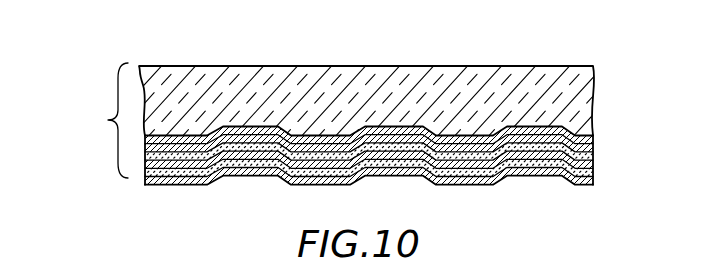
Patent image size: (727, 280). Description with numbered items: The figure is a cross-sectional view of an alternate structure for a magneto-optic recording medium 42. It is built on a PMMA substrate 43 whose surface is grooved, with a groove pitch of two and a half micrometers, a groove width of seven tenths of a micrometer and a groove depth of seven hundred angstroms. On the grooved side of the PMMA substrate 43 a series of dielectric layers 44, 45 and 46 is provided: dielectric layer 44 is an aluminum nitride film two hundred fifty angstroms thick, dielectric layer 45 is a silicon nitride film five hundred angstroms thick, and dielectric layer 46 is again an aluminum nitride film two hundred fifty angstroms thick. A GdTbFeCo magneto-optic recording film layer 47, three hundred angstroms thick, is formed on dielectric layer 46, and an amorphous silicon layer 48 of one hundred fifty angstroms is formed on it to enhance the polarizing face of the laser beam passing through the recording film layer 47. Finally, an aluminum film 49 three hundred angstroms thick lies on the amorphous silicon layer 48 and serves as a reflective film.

The magneto-optic recording medium 42 is at (97, 120).
The PMMA substrate 43 is at (582, 85).
The dielectric layer 44 is at (593, 140).
The dielectric layer 45 is at (593, 148).
The dielectric layer 46 is at (593, 156).
The magneto-optic recording film layer 47 is at (593, 164).
The amorphous silicon layer 48 is at (593, 172).
The aluminum film 49 is at (593, 180).